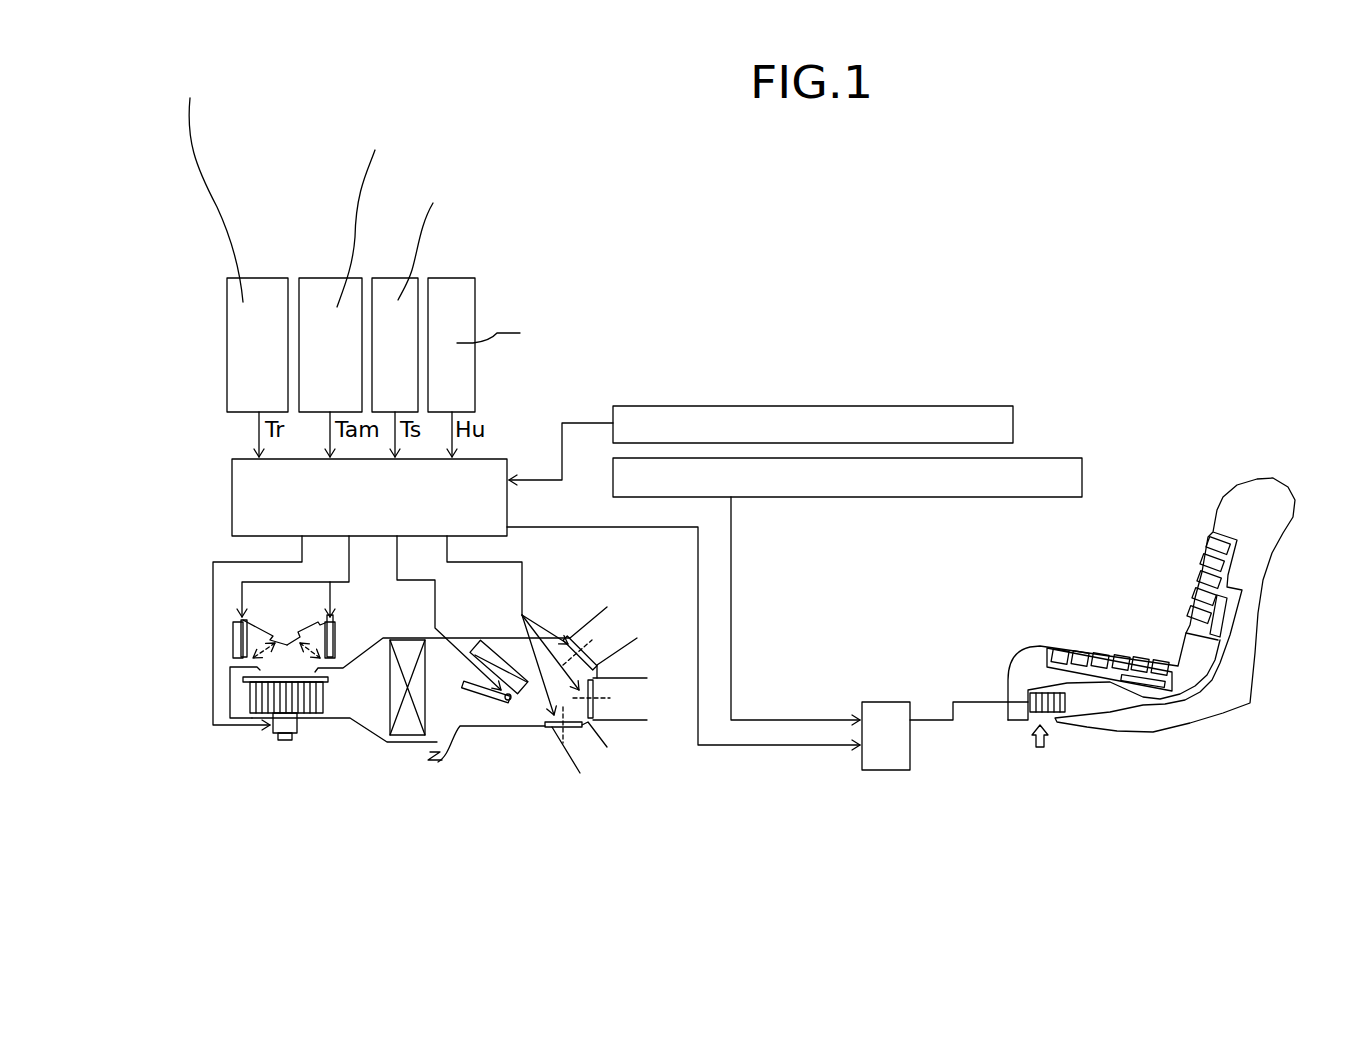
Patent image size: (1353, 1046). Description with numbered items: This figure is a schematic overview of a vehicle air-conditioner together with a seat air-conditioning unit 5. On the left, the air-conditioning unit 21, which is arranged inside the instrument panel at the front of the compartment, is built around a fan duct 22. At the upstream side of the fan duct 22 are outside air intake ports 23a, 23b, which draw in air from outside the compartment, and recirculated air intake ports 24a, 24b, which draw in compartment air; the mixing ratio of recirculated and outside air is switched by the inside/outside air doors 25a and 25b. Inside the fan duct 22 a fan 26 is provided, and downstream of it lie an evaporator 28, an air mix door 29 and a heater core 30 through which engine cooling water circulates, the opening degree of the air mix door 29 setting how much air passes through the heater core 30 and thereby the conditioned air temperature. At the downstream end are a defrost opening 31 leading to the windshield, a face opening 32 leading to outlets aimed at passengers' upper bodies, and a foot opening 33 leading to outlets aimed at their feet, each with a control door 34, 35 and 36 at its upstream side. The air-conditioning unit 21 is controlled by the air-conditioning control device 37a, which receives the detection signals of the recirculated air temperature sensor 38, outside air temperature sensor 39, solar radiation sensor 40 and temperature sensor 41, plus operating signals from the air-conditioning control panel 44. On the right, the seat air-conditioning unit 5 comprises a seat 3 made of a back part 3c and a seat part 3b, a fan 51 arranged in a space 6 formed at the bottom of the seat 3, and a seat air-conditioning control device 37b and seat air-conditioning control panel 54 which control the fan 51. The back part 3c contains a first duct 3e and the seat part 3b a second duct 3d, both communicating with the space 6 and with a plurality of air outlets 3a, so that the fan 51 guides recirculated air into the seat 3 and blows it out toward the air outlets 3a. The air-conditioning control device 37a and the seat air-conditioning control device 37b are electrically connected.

The recirculated air temperature sensor 38 is at (256, 272).
The outside air temperature sensor 39 is at (325, 272).
The solar radiation sensor 40 is at (393, 272).
The temperature sensor 41 is at (452, 272).
The air-conditioning control device 37a is at (495, 457).
The seat air-conditioning control device 37b is at (890, 700).
The air-conditioning control panel 44 is at (1013, 425).
The seat air-conditioning control panel 54 is at (962, 497).
The air-conditioning unit 21 is at (409, 749).
The fan duct 22 is at (503, 727).
The outside air intake port 23a is at (264, 622).
The outside air intake port 23b is at (306, 622).
The recirculated air intake port 24a is at (232, 627).
The recirculated air intake port 24b is at (347, 622).
The inside/outside air door 25a is at (231, 645).
The inside/outside air door 25b is at (338, 644).
The fan 26 is at (250, 695).
The evaporator 28 is at (388, 700).
The air mix door 29 is at (482, 695).
The heater core 30 is at (500, 652).
The defrost opening 31 is at (613, 630).
The face opening 32 is at (632, 697).
The foot opening 33 is at (580, 747).
The control door 34 is at (567, 643).
The control door 35 is at (593, 688).
The control door 36 is at (557, 737).
The seat 3 is at (1195, 496).
The air outlets 3a is at (1202, 560).
The seat part 3b is at (1030, 645).
The back part 3c is at (1252, 478).
The second duct 3d is at (1130, 687).
The first duct 3e is at (1232, 620).
The seat air-conditioning unit 5 is at (966, 800).
The space 6 is at (1080, 703).
The fan 51 is at (1043, 687).